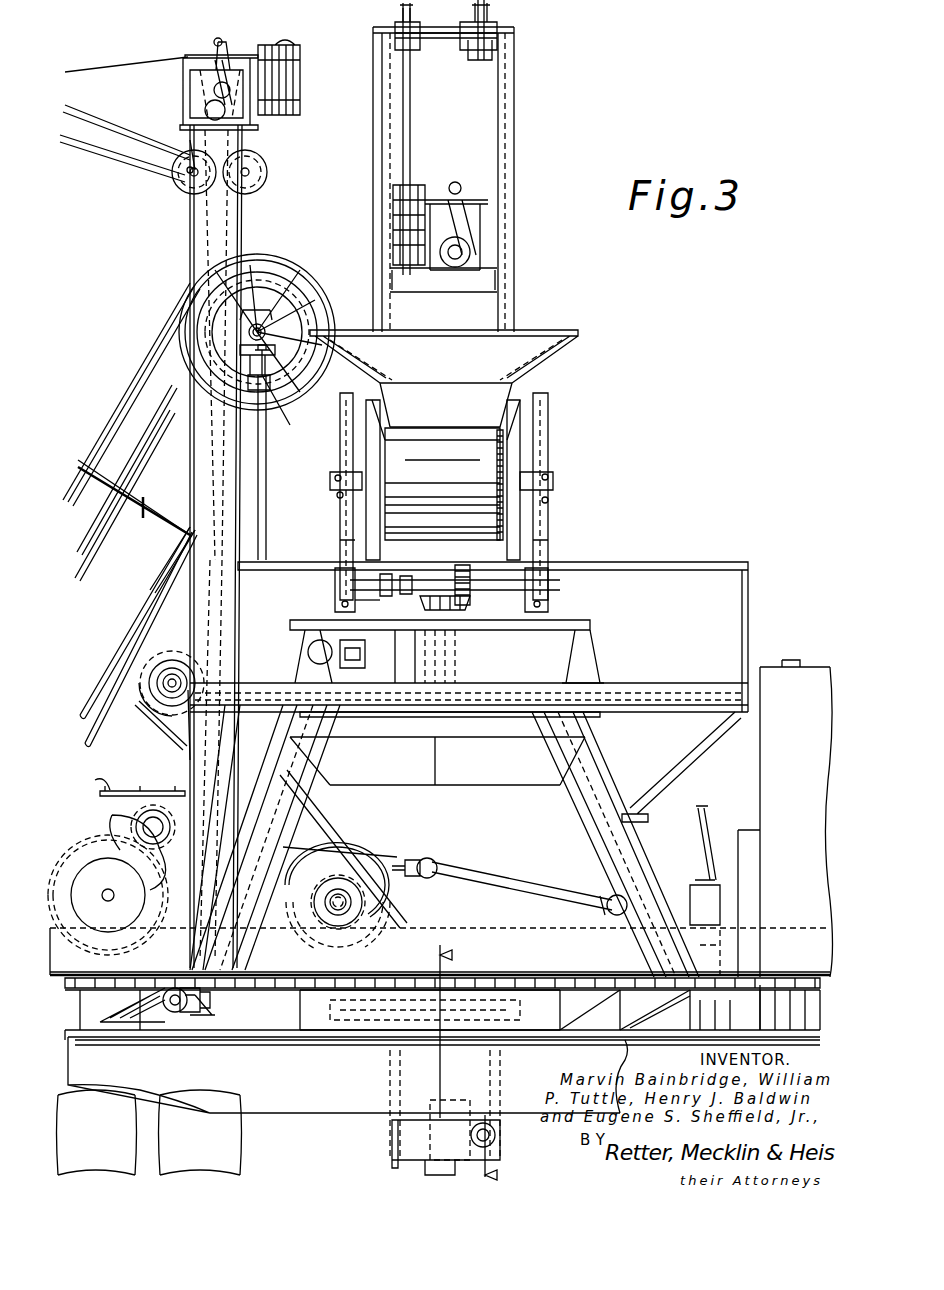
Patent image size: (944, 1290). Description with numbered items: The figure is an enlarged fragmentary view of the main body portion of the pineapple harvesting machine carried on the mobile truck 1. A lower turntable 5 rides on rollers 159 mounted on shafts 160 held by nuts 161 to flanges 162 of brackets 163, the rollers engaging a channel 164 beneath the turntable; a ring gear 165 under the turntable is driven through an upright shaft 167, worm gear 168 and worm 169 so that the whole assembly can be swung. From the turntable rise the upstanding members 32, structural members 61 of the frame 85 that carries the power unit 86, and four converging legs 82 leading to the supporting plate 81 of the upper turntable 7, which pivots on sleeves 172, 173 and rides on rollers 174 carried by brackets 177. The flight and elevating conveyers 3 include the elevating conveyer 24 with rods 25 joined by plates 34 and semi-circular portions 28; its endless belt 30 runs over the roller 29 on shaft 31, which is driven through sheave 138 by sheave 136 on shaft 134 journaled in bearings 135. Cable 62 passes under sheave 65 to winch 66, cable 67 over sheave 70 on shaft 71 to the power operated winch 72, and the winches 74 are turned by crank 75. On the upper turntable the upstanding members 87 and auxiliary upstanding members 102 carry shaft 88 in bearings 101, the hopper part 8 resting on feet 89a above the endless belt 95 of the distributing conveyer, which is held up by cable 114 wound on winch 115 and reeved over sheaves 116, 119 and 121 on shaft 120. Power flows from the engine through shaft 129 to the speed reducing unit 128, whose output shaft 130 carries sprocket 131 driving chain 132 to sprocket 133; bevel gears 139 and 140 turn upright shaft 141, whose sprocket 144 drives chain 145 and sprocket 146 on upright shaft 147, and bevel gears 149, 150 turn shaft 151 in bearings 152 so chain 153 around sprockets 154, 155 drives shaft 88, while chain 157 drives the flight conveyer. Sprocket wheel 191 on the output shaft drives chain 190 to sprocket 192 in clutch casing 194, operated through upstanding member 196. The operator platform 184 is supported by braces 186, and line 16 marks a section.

The mobile truck 1 is at (297, 1113).
The flight and elevating conveyers 3 is at (112, 424).
The turntable 5 is at (570, 975).
The upper turntable 7 is at (565, 624).
The hopper 8 is at (555, 345).
The section line 16 is at (440, 955).
The elevating conveyer 24 is at (96, 478).
The upper and lower rods 25 is at (133, 396).
The semi-circular portions 28 is at (185, 300).
The roller 29 is at (305, 318).
The endless belt 30 is at (84, 543).
The shaft 31 is at (280, 300).
The upstanding members 32 is at (238, 228).
The plates 34 is at (134, 504).
The structural members 61 is at (62, 978).
The cable 62 is at (97, 157).
The sheave 65 is at (267, 182).
The winch 66 is at (300, 105).
The cable 67 is at (110, 124).
The sheave 70 is at (178, 190).
The shaft 71 is at (195, 152).
The power operated winch 72 is at (98, 838).
The winches 74 is at (226, 50).
The crank 75 is at (214, 40).
The supporting plate 81 is at (595, 684).
The legs 82 is at (305, 800).
The frame 85 is at (785, 932).
The power unit 86 is at (805, 667).
The upstanding members 87 is at (375, 148).
The shaft 88 is at (553, 480).
The feet 89a is at (340, 433).
The endless belt 95 is at (466, 440).
The bearing 101 is at (340, 497).
The auxiliary upstanding members 102 is at (342, 546).
The cable 114 is at (410, 135).
The winch 115 is at (425, 188).
The sheave 116 is at (398, 12).
The sheave 119 is at (478, 55).
The shaft 120 is at (445, 36).
The third sheave 121 is at (497, 12).
The speed reducing unit 128 is at (375, 858).
The shaft 129 is at (525, 888).
The output shaft 130 is at (372, 912).
The sprocket 131 is at (365, 893).
The sprocket chain 132 is at (325, 830).
The sprocket 133 is at (158, 718).
The shaft 134 is at (160, 712).
The bearings 135 is at (153, 660).
The sheave 136 is at (150, 672).
The sheave 138 is at (285, 315).
The bevel gear 139 is at (258, 322).
The bevel gear 140 is at (277, 375).
The upright shaft 141 is at (280, 530).
The sprocket 144 is at (235, 750).
The sprocket chain 145 is at (378, 718).
The sprocket 146 is at (462, 714).
The upright shaft 147 is at (455, 658).
The bevel gear 149 is at (450, 606).
The bevel gear 150 is at (488, 598).
The shaft 151 is at (420, 588).
The bearings 152 is at (335, 600).
The sprocket chain 153 is at (392, 548).
The sprocket 154 is at (378, 600).
The sprocket 155 is at (393, 470).
The sprocket chain 157 is at (165, 571).
The rollers 159 is at (205, 1000).
The shafts 160 is at (172, 1012).
The nuts 161 is at (195, 1018).
The flanges 162 is at (645, 985).
The brackets 163 is at (132, 1008).
The channel 164 is at (782, 982).
The ring gear 165 is at (590, 1010).
The upright shaft 167 is at (448, 1095).
The worm gear 168 is at (390, 1150).
The worm 169 is at (497, 1135).
The sleeve 172 is at (408, 672).
The sleeve 173 is at (362, 652).
The rollers 174 is at (374, 655).
The brackets 177 is at (310, 652).
The platform 184 is at (748, 615).
The braces 186 is at (685, 748).
The sprocket chain 190 is at (272, 928).
The sprocket wheel 191 is at (385, 925).
The sprocket 192 is at (102, 793).
The casing 194 is at (157, 803).
The upstanding member 196 is at (110, 790).